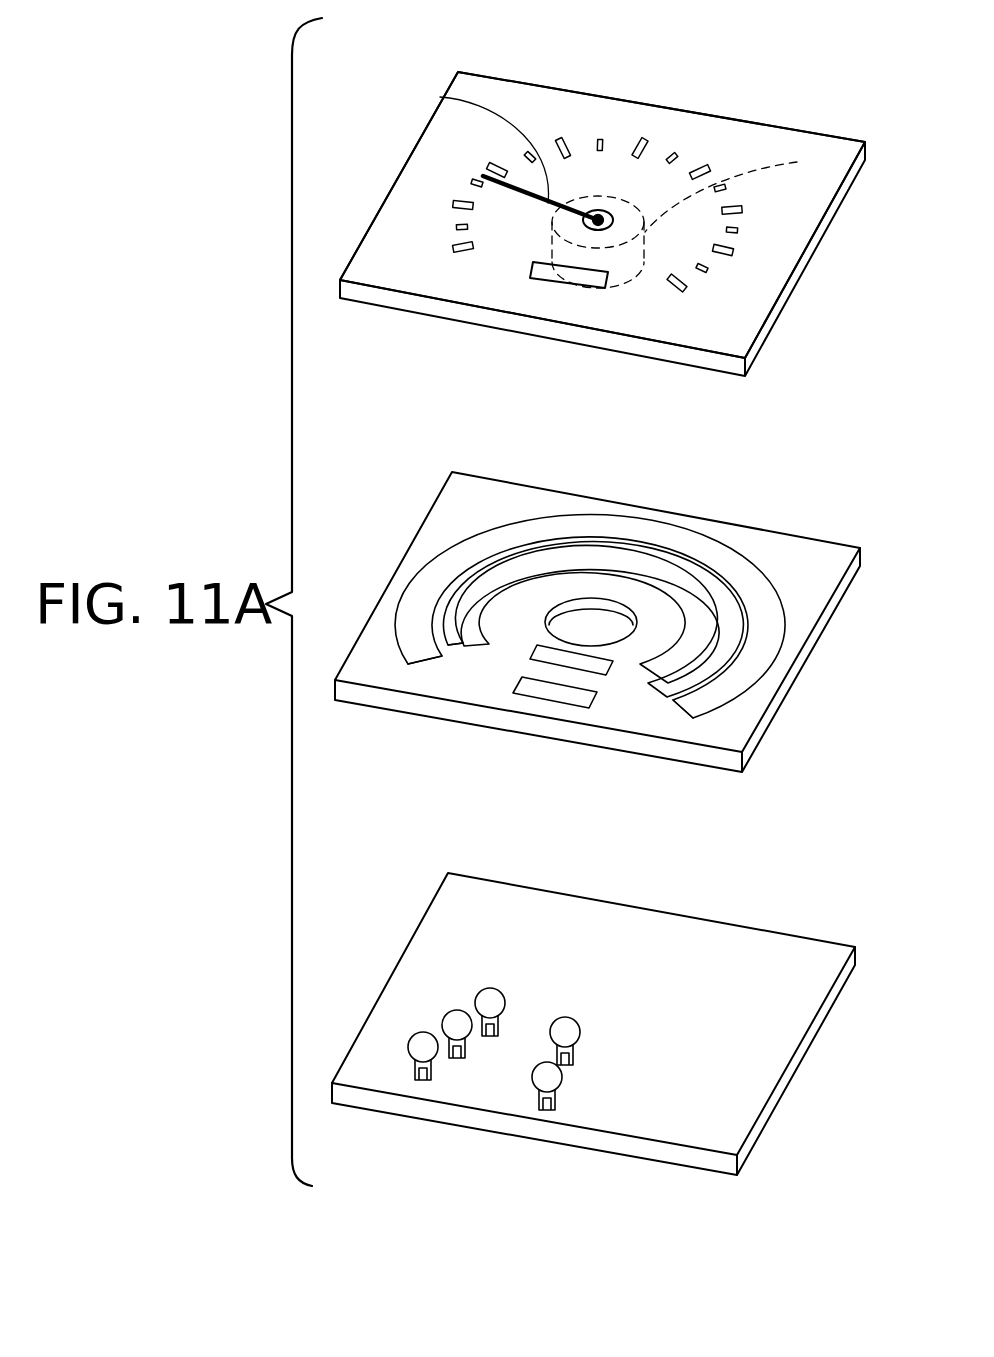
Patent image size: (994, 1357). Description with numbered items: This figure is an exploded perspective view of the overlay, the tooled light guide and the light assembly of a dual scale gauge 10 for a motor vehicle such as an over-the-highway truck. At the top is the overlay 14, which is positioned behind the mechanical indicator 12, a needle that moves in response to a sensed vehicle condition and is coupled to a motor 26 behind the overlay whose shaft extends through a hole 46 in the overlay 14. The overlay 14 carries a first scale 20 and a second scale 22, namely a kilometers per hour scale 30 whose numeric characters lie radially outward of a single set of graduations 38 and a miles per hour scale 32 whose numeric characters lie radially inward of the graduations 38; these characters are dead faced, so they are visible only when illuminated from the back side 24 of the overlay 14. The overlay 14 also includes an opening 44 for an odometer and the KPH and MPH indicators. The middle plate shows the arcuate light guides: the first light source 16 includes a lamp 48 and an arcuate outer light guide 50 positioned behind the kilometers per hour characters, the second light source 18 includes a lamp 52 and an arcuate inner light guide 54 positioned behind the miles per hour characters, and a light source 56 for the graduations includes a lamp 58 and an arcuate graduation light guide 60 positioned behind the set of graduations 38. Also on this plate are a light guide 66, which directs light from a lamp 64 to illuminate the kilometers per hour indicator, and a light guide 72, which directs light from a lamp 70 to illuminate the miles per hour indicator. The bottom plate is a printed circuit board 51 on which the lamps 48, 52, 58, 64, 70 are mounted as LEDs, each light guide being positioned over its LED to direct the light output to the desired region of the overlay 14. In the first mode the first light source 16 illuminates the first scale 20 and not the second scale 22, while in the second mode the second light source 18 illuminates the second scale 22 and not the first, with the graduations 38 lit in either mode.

The dual scale gauge 10 is at (644, 46).
The mechanical indicator 12 is at (440, 97).
The overlay 14 is at (538, 95).
The first light source 16 is at (415, 549).
The second light source 18 is at (505, 616).
The first scale 20 is at (430, 186).
The second scale 22 is at (652, 152).
The back side 24 is at (702, 372).
The motor 26 is at (736, 190).
The kilometers per hour scale 30 is at (699, 306).
The miles per hour scale 32 is at (646, 279).
The set of graduations 38 is at (477, 258).
The opening 44 is at (533, 265).
The hole 46 is at (610, 211).
The lamp 48 is at (423, 1040).
The outer light guide 50 is at (425, 648).
The printed circuit board 51 is at (410, 914).
The lamp 52 is at (492, 998).
The inner light guide 54 is at (490, 633).
The light source for the set of graduations 56 is at (490, 552).
The lamp 58 is at (457, 1020).
The graduation light guide 60 is at (667, 685).
The lamp 64 is at (553, 1077).
The light guide 66 is at (548, 693).
The lamp 70 is at (567, 1023).
The light guide 72 is at (593, 667).